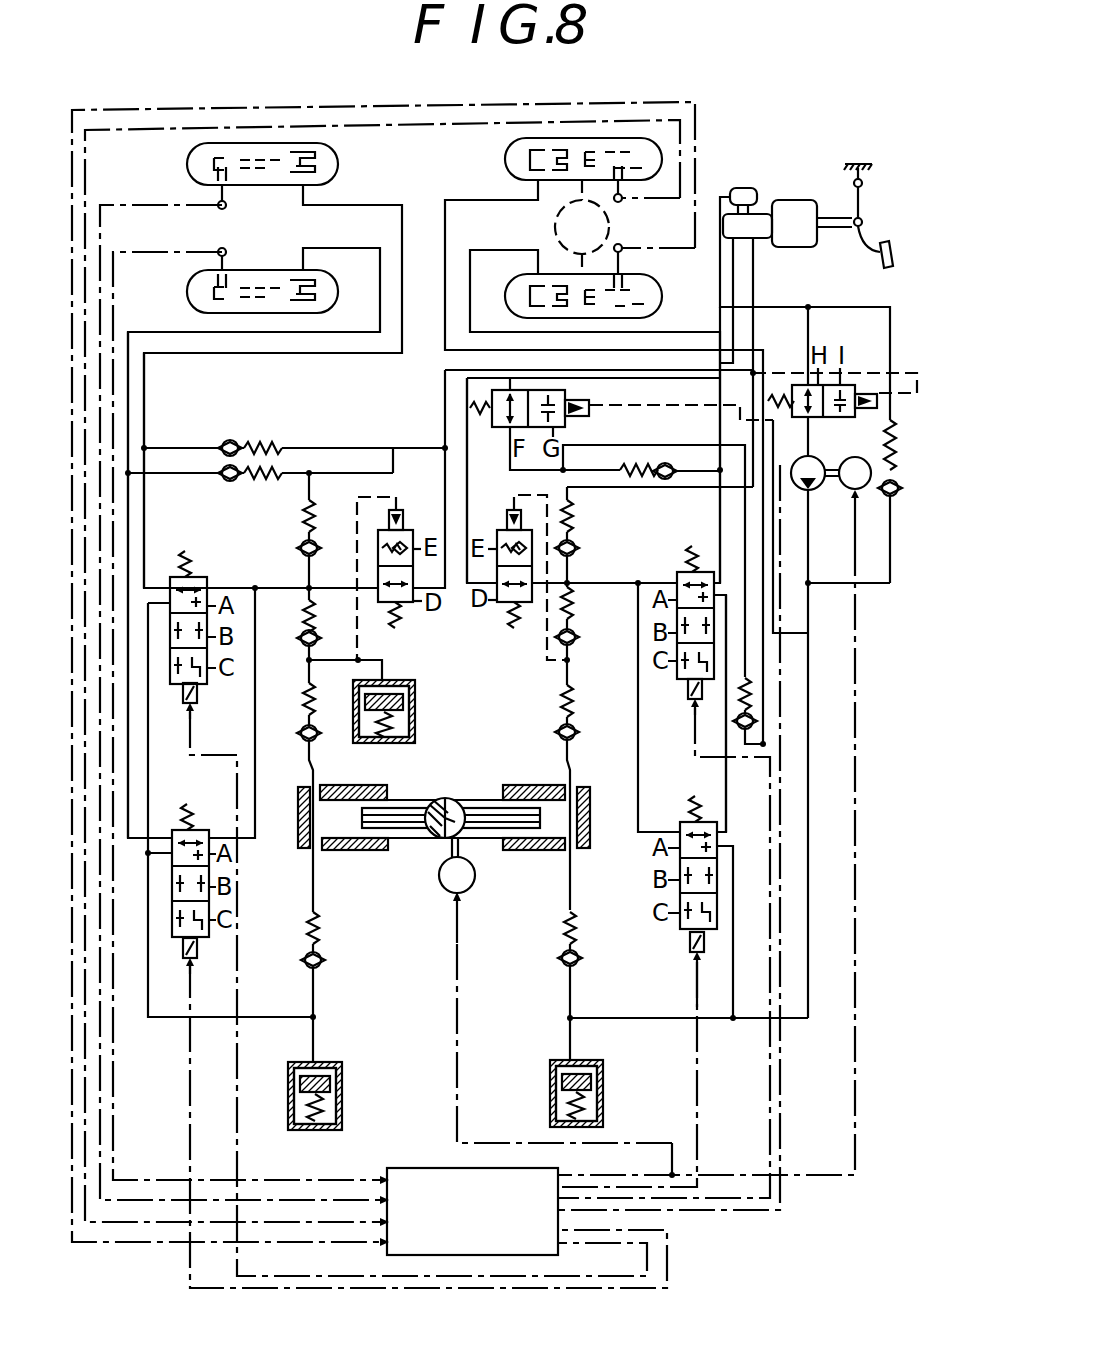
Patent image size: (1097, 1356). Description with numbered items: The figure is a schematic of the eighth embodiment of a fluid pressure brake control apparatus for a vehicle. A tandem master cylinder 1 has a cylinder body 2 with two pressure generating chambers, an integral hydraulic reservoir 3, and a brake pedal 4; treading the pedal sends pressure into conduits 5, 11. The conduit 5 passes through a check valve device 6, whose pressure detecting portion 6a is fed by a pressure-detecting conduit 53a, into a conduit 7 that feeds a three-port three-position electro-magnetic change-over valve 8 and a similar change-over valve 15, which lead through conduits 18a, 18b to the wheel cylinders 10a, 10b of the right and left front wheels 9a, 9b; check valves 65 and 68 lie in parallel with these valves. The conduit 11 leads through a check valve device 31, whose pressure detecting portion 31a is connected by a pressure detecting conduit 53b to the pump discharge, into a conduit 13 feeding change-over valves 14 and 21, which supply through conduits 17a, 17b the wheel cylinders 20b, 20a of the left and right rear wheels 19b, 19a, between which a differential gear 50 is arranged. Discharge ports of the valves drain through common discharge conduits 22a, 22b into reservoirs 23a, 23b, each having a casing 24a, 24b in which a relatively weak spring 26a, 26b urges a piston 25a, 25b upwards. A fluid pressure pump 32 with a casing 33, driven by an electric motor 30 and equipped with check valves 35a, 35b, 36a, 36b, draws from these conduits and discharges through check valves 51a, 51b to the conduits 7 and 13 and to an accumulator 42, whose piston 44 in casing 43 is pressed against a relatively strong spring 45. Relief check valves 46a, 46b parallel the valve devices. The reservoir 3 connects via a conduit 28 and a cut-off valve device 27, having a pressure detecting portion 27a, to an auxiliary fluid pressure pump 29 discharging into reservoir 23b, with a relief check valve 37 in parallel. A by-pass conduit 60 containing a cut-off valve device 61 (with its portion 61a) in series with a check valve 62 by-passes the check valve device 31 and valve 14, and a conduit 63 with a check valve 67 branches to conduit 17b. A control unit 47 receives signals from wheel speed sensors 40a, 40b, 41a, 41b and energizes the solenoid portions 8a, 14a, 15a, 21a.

The tandem master cylinder 1 is at (797, 192).
The cylinder body 2 is at (765, 240).
The hydraulic reservoir 3 is at (743, 188).
The brake pedal 4 is at (893, 252).
The conduit 5 is at (735, 322).
The check valve device 6 is at (414, 524).
The pressure detecting portion 6a is at (388, 518).
The conduit 7 is at (348, 588).
The three-port three-position electro-magnetic change-over valve 8 is at (203, 571).
The solenoid portion 8a is at (198, 695).
The right front wheel 9a is at (187, 165).
The left front wheel 9b is at (187, 295).
The wheel cylinder 10a is at (330, 160).
The wheel cylinder 10b is at (325, 292).
The conduit 11 is at (753, 286).
The conduit 13 is at (592, 583).
The three-port three-position change-over valve 14 is at (680, 564).
The solenoid portion 14a is at (690, 702).
The change-over valve 15 is at (205, 822).
The solenoid portion 15a is at (200, 962).
The conduit 17a is at (720, 527).
The conduit 17b is at (810, 633).
The conduit 18a is at (146, 415).
The conduit 18b is at (130, 791).
The right rear wheel 19a is at (662, 159).
The left rear wheel 19b is at (662, 295).
The wheel cylinder 20a is at (505, 160).
The wheel cylinder 20b is at (512, 292).
The change-over valve 21 is at (678, 816).
The solenoid portion 21a is at (690, 958).
The common discharge conduit 22a is at (282, 1017).
The common discharge conduit 22b is at (650, 1018).
The hydraulic reservoir 23a is at (325, 1076).
The hydraulic reservoir 23b is at (585, 1073).
The casing 24a is at (300, 1084).
The casing 24b is at (562, 1080).
The piston 25a is at (300, 1108).
The piston 25b is at (562, 1104).
The relatively weak spring 26a is at (342, 1107).
The relatively weak spring 26b is at (603, 1106).
The cut-off valve device 27 is at (846, 378).
The pressure detecting portion 27a is at (878, 416).
The conduit 28 is at (785, 307).
The auxiliary fluid pressure pump 29 is at (830, 450).
The electric motor 30 is at (870, 450).
The check valve device 31 is at (503, 508).
The pressure detecting portion 31a is at (510, 522).
The fluid pressure pump 32 is at (447, 796).
The casing 33 is at (352, 851).
The check valve 35a is at (305, 960).
The check valve 35b is at (580, 958).
The check valve 36a is at (304, 732).
The check valve 36b is at (576, 730).
The check valve 37 is at (900, 484).
The wheel speed sensor 40a is at (227, 207).
The wheel speed sensor 40b is at (227, 254).
The wheel speed sensor 41a is at (623, 202).
The wheel speed sensor 41b is at (623, 248).
The accumulator 42 is at (391, 703).
The casing 43 is at (364, 740).
The piston 44 is at (415, 701).
The relatively strong spring 45 is at (390, 742).
The check valve 46a is at (300, 548).
The check valve 46b is at (578, 548).
The control unit 47 is at (453, 1168).
The differential gear 50 is at (556, 230).
The check valve 51a is at (302, 636).
The check valve 51b is at (575, 636).
The pressure-detecting conduit 53a is at (352, 636).
The pressure detecting conduit 53b is at (547, 652).
The by-pass conduit 60 is at (505, 446).
The cut-off valve device 61 is at (480, 402).
The pilot actuator of valve 61 61a is at (590, 402).
The check valve 62 is at (658, 480).
The conduit 63 is at (700, 445).
The check valve 65 is at (231, 440).
The check valve 67 is at (733, 715).
The check valve 68 is at (230, 482).